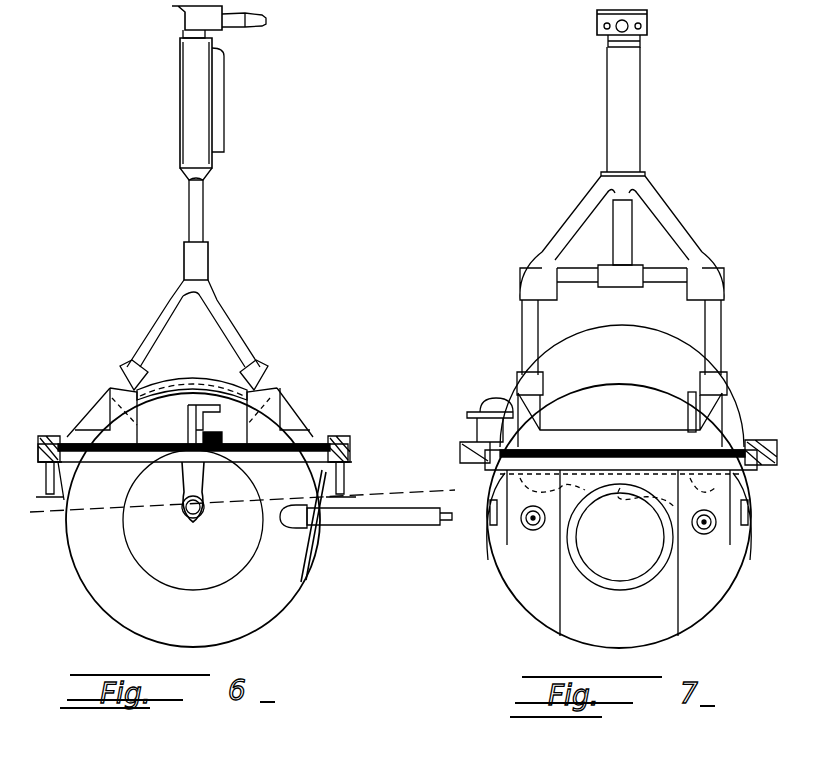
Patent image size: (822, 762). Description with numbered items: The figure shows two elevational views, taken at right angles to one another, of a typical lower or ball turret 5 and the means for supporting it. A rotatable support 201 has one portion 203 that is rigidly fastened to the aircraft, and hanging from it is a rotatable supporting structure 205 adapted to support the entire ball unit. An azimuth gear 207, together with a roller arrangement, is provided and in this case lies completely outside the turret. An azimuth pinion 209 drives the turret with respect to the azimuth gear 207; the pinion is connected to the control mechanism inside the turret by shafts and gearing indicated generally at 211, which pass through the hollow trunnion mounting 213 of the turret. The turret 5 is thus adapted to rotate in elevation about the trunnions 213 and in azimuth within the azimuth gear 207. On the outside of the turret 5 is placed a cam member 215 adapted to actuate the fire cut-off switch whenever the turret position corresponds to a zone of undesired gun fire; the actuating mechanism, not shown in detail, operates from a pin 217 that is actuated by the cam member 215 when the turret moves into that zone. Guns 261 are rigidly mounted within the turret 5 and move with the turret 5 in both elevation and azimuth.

In FIG. 6, the ball turret 5 is at (288, 605).
In FIG. 7, the ball turret 5 is at (528, 612).
In FIG. 6, the rotatable support 201 is at (174, 37).
In FIG. 6, the portion rigidly fastened to the aircraft 203 is at (172, 9).
In FIG. 6, the rotatable supporting structure 205 is at (217, 97).
In FIG. 6, the azimuth gear 207 is at (325, 440).
In FIG. 7, the azimuth gear 207 is at (757, 440).
In FIG. 6, the azimuth pinion 209 is at (200, 434).
In FIG. 6, the shafts and gearing 211 is at (188, 414).
In FIG. 7, the shafts and gearing 211 is at (462, 418).
In FIG. 6, the hollow trunnion mounting 213 is at (178, 525).
In FIG. 7, the hollow trunnion mounting 213 is at (490, 527).
In FIG. 6, the cam member 215 is at (60, 493).
In FIG. 7, the cam member 215 is at (546, 504).
In FIG. 6, the pin 217 is at (346, 485).
In FIG. 7, the pin 217 is at (625, 478).
In FIG. 6, the guns 261 is at (393, 527).
In FIG. 7, the guns 261 is at (700, 522).